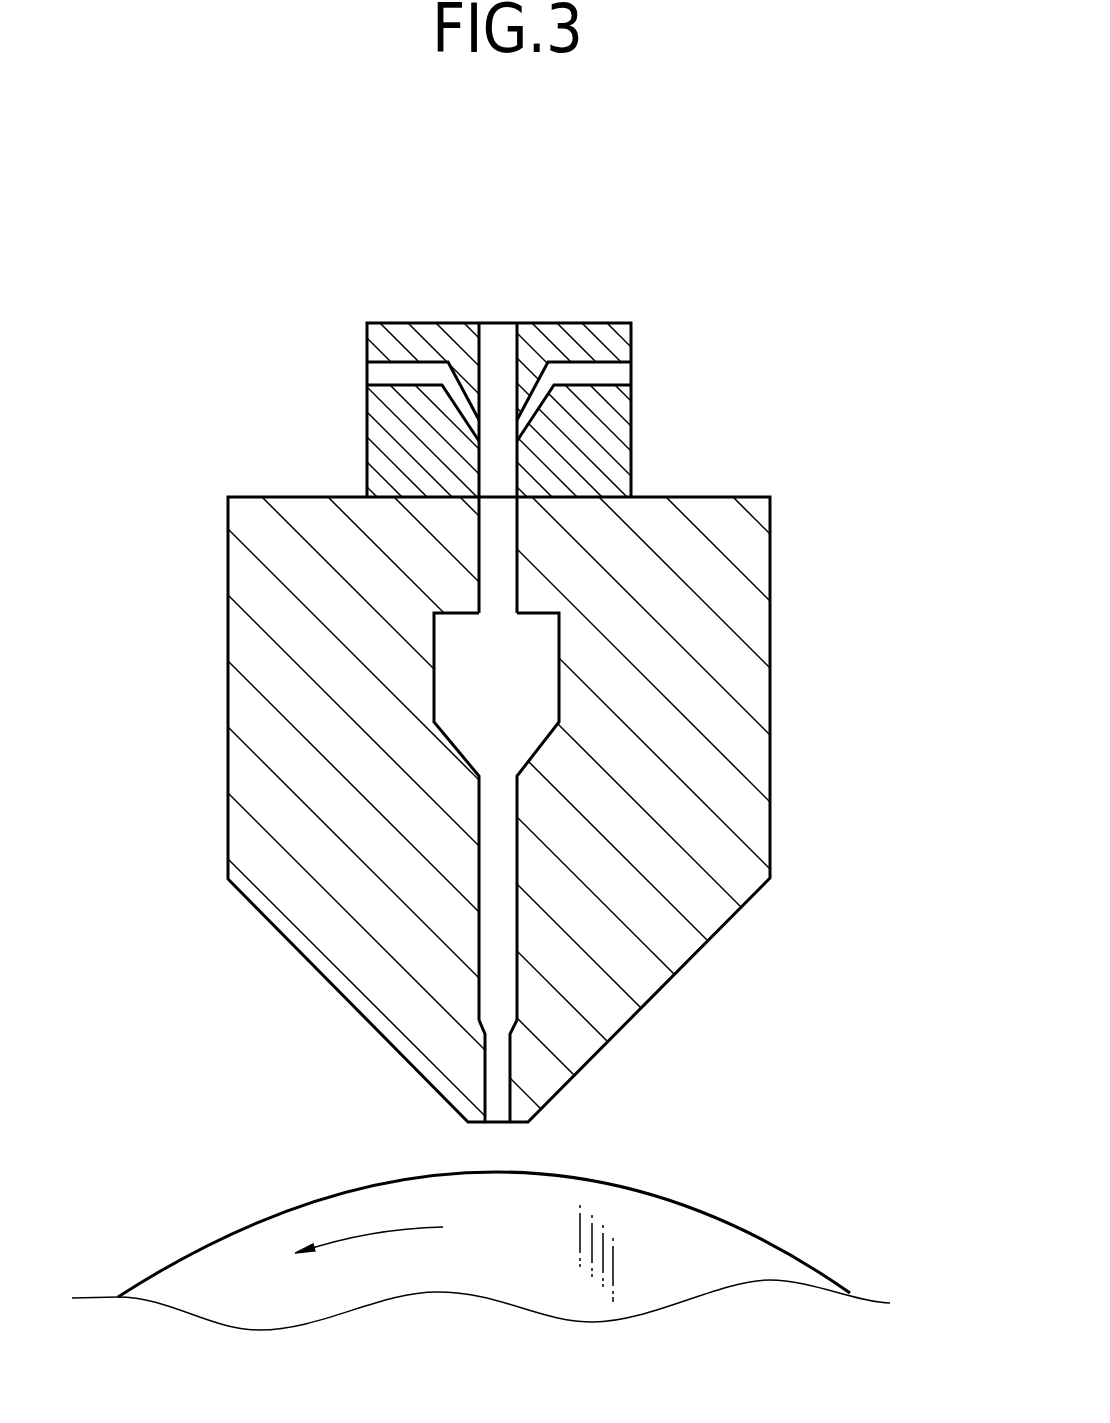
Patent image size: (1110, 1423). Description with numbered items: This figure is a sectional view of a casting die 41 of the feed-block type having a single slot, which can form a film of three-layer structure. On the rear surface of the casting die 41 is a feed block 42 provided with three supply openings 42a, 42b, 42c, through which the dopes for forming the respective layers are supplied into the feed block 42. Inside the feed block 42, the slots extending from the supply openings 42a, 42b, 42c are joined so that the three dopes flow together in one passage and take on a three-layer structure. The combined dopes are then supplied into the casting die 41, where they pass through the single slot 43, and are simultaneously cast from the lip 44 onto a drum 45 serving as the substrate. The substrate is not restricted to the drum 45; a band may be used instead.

The casting die 41 is at (704, 978).
The feed block 42 is at (631, 425).
The supply opening 42a is at (631, 372).
The supply opening 42b is at (497, 328).
The supply opening 42c is at (367, 373).
The single slot 43 is at (518, 549).
The lip 44 is at (500, 1128).
The drum 45 is at (803, 1258).